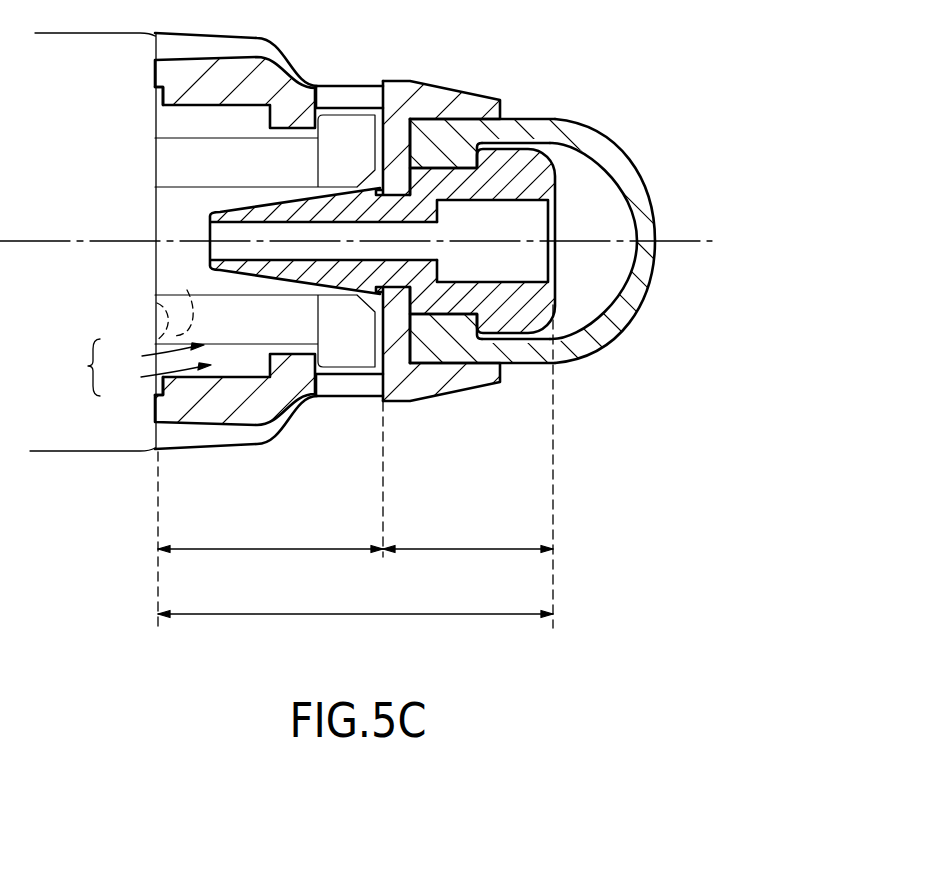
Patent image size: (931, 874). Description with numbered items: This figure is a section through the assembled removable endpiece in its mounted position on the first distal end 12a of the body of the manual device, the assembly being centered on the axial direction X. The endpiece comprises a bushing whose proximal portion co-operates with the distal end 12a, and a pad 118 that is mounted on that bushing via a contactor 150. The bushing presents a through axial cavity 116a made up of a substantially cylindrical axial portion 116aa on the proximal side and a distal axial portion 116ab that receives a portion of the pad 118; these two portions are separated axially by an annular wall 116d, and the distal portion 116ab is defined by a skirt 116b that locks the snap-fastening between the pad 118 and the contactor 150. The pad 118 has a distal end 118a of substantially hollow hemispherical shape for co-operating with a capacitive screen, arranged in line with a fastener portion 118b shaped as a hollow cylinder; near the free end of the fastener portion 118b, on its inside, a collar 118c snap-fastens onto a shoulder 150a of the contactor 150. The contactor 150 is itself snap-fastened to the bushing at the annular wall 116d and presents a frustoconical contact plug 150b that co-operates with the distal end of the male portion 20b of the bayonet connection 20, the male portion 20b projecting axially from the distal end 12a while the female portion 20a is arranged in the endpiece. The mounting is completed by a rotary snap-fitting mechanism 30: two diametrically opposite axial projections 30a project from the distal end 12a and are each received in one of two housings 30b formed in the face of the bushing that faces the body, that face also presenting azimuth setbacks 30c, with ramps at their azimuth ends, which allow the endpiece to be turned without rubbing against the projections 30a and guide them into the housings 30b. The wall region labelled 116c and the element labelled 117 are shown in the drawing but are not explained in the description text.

The first distal end 12a is at (151, 441).
The housing flange wall 116c is at (157, 68).
The azimuth setbacks 30c is at (158, 93).
The sealing ring 117 is at (348, 100).
The skirt 116b is at (461, 300).
The annular wall 116d is at (397, 318).
The pad 118 is at (465, 250).
The distal end 118a is at (632, 160).
The fastener portion 118b is at (516, 118).
The collar 118c is at (438, 156).
The contactor 150 is at (449, 300).
The shoulder 150a is at (478, 335).
The contact plug 150b is at (300, 187).
The rotary snap-fitting mechanism 30 is at (132, 303).
The axial projections 30a is at (157, 305).
The housings 30b is at (192, 301).
The bayonet connection 20 is at (126, 367).
The female portion 20a is at (156, 379).
The male portion 20b is at (153, 351).
The axial direction X is at (367, 241).
The cylindrical axial portion 116aa is at (270, 515).
The distal axial portion 116ab is at (468, 466).
The through axial cavity 116a is at (355, 601).